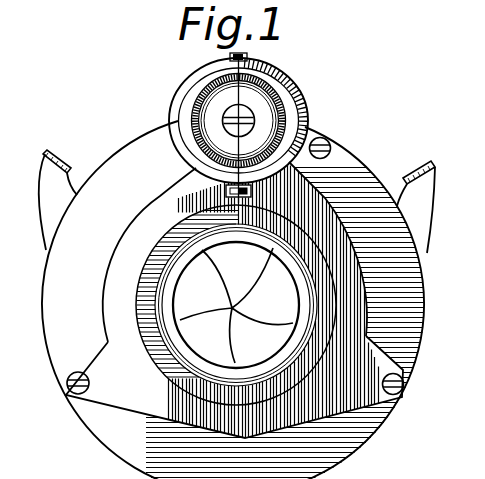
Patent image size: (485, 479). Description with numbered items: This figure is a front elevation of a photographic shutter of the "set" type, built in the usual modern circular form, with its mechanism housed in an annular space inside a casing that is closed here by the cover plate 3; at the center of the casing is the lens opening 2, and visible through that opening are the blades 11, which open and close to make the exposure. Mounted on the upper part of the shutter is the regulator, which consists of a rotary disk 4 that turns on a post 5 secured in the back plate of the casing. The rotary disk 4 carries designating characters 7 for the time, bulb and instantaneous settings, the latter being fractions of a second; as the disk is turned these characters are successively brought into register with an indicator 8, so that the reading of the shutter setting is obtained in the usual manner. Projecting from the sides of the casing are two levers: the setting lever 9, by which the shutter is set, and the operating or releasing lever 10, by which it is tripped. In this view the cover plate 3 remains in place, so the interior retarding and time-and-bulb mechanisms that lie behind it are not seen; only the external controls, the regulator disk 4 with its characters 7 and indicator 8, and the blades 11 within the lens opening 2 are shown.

The lens opening 2 is at (226, 54).
The cover plate 3 is at (352, 163).
The rotary disk 4 is at (297, 113).
The post 5 is at (248, 108).
The designating characters 7 is at (196, 89).
The indicator 8 is at (244, 55).
The setting lever 9 is at (435, 191).
The operating or releasing lever 10 is at (63, 162).
The blades 11 is at (258, 271).